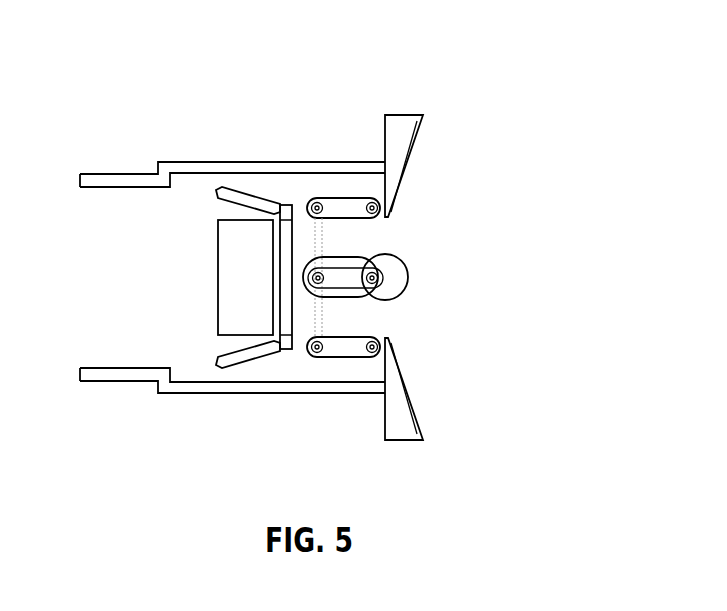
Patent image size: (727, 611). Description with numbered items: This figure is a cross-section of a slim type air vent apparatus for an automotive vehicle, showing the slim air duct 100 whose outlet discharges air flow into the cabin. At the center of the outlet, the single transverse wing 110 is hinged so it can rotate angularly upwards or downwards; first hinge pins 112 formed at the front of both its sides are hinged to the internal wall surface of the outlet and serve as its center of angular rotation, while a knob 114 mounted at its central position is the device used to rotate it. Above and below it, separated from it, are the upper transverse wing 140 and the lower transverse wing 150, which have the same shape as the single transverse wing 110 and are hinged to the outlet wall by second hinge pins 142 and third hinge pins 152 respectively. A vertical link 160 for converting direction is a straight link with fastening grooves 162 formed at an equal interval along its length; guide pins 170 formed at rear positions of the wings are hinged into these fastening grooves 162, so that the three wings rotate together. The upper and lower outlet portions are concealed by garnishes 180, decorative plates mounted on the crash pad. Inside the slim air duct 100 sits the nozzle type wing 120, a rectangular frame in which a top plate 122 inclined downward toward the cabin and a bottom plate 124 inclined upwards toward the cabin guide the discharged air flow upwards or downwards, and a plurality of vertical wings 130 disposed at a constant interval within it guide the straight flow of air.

The slim air duct 100 is at (204, 154).
The single transverse wing 110 is at (403, 260).
The first hinge pins 112 is at (393, 297).
The knob 114 is at (408, 278).
The nozzle type wing 120 is at (191, 282).
The top plate 122 is at (240, 203).
The bottom plate 124 is at (243, 367).
The vertical wings 130 is at (230, 278).
The upper transverse wing 140 is at (342, 203).
The second hinge pins 142 is at (376, 200).
The lower transverse wing 150 is at (345, 352).
The third hinge pins 152 is at (364, 358).
The vertical link for converting direction 160 is at (326, 235).
The fastening grooves 162 is at (322, 354).
The guide pins 170 is at (320, 203).
The garnishes 180 is at (403, 158).